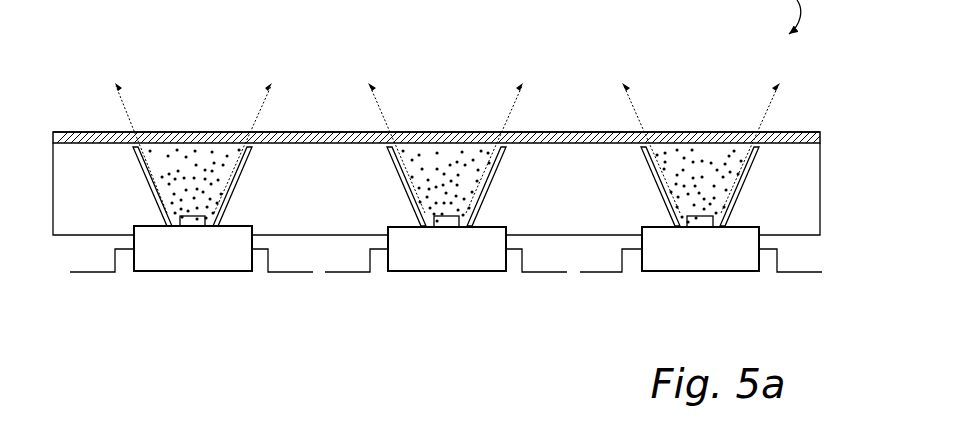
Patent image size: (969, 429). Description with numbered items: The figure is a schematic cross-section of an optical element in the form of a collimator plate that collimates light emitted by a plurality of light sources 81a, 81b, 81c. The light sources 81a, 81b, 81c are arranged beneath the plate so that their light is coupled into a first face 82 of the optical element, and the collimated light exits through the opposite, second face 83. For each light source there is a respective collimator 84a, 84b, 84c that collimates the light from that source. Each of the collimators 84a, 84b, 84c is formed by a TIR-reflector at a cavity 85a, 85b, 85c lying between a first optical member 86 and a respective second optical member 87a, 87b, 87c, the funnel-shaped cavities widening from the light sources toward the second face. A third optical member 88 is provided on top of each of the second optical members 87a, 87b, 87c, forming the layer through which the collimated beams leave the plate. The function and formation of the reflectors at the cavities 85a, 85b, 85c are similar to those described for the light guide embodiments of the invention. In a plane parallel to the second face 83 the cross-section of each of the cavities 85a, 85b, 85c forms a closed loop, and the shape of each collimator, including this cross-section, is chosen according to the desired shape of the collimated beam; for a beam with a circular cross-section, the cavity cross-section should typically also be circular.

The light source 81a is at (193, 223).
The light source 81b is at (448, 223).
The light source 81c is at (700, 223).
The first face 82 is at (570, 237).
The second face 83 is at (580, 133).
The collimator 84a is at (203, 158).
The collimator 84b is at (460, 176).
The collimator 84c is at (718, 158).
The cavity 85a is at (147, 182).
The cavity 85b is at (392, 170).
The cavity 85c is at (643, 163).
The first optical member 86 is at (820, 170).
The second optical member 87a is at (170, 147).
The second optical member 87b is at (427, 158).
The second optical member 87c is at (697, 142).
The third optical member 88 is at (542, 130).